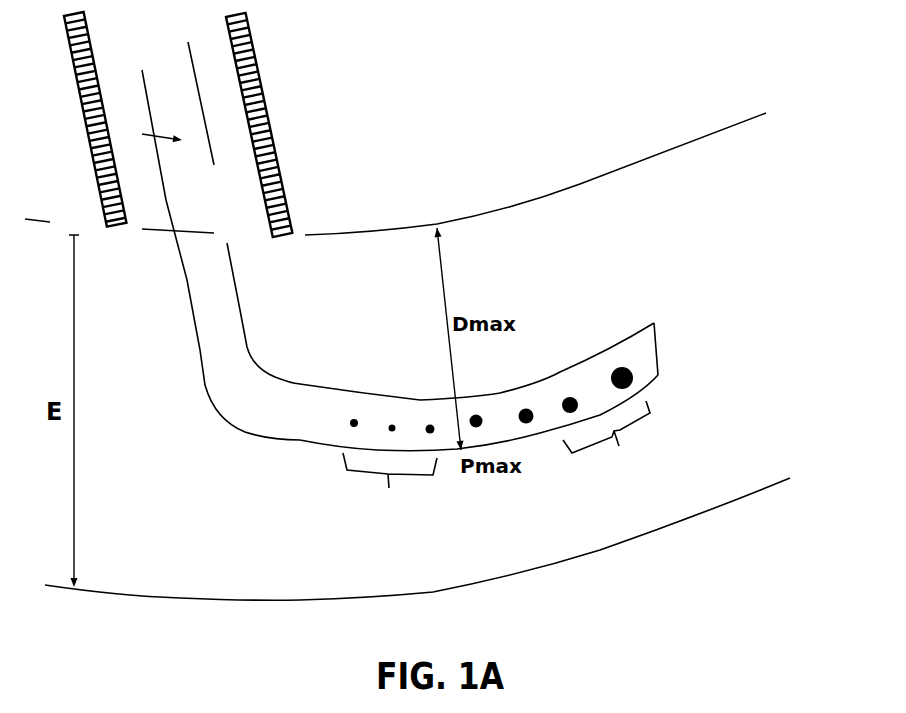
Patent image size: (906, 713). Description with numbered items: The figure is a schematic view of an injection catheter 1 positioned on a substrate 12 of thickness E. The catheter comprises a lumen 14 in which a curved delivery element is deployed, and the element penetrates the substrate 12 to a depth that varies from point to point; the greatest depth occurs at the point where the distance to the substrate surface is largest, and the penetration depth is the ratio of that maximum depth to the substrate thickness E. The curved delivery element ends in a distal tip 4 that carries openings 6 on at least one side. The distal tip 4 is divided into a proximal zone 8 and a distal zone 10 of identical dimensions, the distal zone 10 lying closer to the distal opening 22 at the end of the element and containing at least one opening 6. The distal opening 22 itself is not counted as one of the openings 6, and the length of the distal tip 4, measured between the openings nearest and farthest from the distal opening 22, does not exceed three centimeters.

The injection catheter 1 is at (338, 84).
The substrate 12 is at (618, 148).
The lumen 14 is at (306, 149).
The distal tip 4 is at (408, 375).
The openings 6 is at (575, 394).
The distal opening 22 is at (673, 352).
The distal zone 10 is at (585, 439).
The proximal zone 8 is at (413, 466).